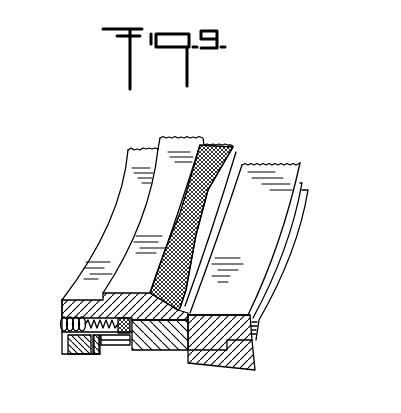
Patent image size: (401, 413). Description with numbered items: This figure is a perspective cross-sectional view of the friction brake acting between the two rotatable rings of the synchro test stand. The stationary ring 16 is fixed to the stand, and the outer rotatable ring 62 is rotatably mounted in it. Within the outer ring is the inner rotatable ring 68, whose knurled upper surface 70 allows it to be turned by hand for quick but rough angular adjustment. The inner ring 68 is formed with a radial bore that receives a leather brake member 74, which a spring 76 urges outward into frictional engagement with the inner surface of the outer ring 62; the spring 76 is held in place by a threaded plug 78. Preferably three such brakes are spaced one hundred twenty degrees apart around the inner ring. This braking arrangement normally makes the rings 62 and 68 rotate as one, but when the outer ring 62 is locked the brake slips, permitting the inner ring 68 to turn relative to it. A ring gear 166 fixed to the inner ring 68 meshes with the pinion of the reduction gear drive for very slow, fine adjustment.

The stationary ring 16 is at (243, 368).
The outer rotatable ring 62 is at (254, 336).
The inner rotatable ring 68 is at (127, 198).
The knurled upper surface 70 is at (214, 152).
The leather brake member 74 is at (123, 336).
The spring 76 is at (100, 350).
The threaded plug 78 is at (61, 323).
The ring gear 166 is at (82, 357).